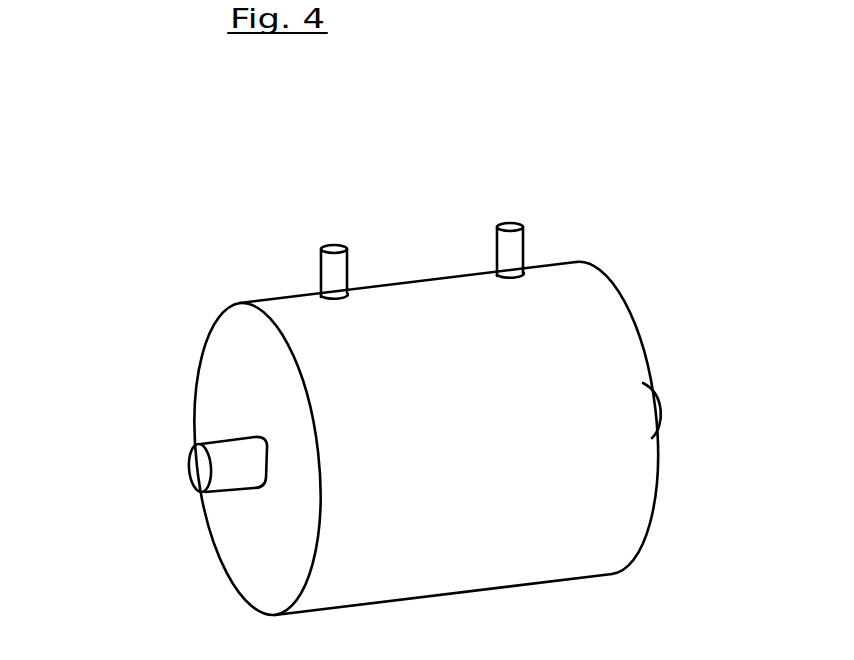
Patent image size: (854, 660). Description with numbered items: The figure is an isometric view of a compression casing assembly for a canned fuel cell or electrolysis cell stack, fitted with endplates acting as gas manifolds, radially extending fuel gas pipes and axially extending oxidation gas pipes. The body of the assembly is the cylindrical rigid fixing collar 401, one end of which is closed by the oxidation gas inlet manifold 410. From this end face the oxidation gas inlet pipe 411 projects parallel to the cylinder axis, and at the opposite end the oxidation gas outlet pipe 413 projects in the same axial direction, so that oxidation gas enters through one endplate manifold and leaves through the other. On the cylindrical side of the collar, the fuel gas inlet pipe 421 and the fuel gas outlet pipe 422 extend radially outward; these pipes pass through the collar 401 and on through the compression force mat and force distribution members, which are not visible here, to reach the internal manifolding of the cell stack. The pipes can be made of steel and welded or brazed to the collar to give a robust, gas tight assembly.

The rigid fixing collar 401 is at (285, 298).
The oxidation gas inlet manifold 410 is at (256, 553).
The oxidation gas inlet pipe 411 is at (191, 453).
The oxidation gas outlet pipe 413 is at (660, 404).
The fuel gas inlet pipe 421 is at (323, 247).
The fuel gas outlet pipe 422 is at (527, 228).